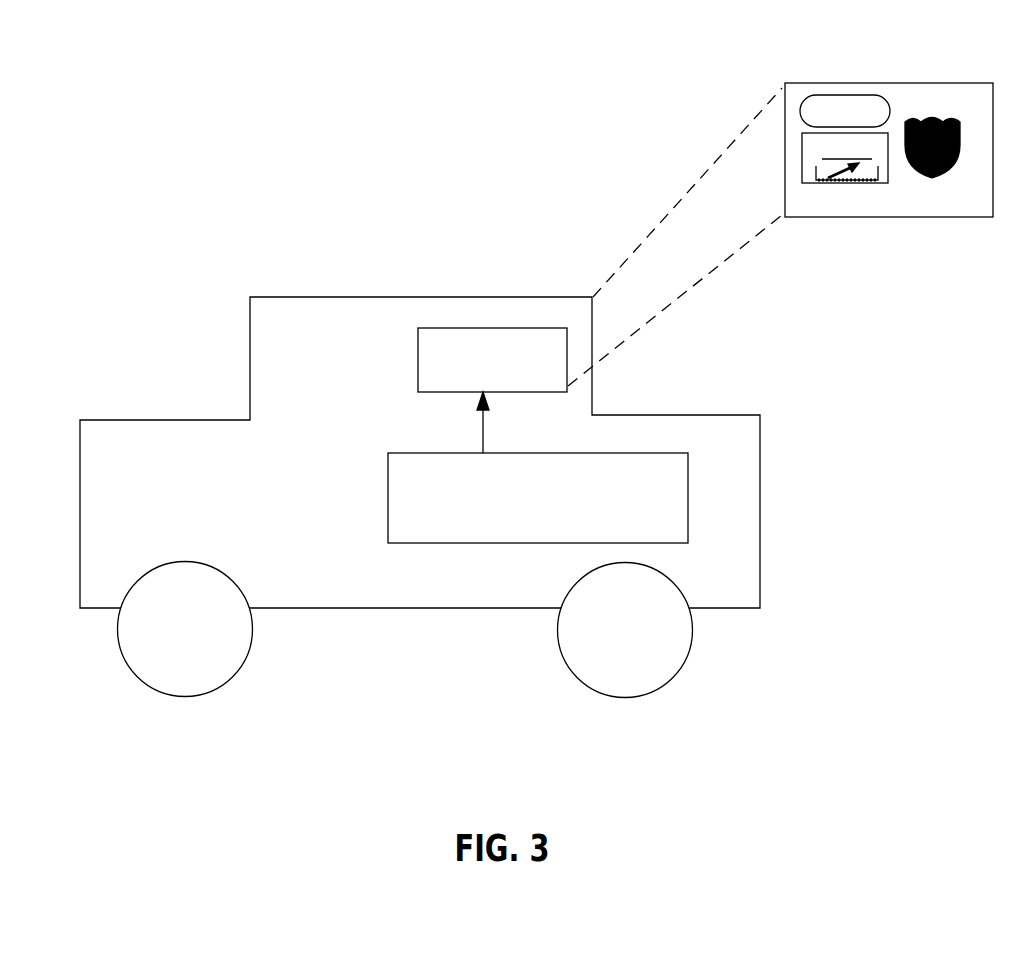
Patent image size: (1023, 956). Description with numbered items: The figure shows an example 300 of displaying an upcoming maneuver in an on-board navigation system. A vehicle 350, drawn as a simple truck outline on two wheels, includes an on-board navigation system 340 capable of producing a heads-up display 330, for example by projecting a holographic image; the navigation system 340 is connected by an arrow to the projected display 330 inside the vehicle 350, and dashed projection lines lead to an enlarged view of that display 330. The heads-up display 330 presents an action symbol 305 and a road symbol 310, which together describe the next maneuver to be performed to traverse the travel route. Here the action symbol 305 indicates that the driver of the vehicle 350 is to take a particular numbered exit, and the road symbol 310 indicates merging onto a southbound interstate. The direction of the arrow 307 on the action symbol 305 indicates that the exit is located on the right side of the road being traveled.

The example 300 is at (541, 36).
The action symbol 305 is at (847, 185).
The arrow 307 is at (808, 155).
The road symbol 310 is at (927, 176).
The heads-up display 330 is at (497, 328).
The on-board navigation system 340 is at (388, 485).
The vehicle 350 is at (327, 297).